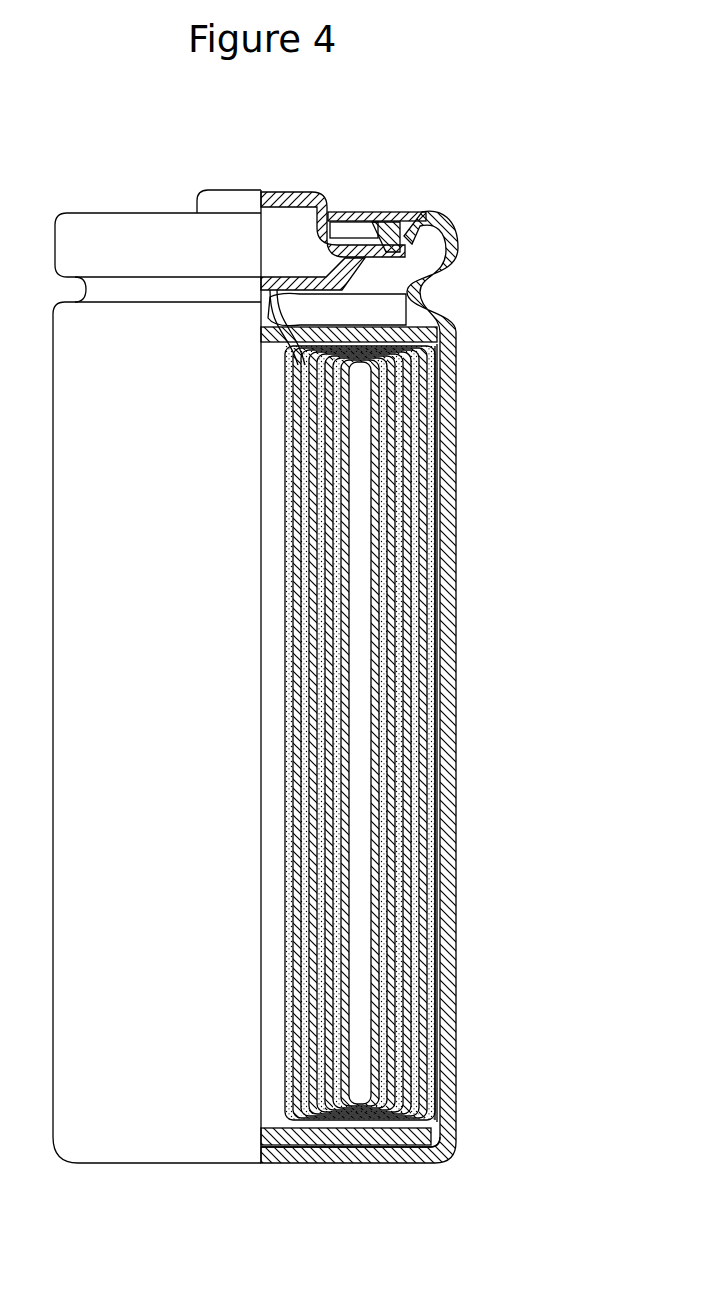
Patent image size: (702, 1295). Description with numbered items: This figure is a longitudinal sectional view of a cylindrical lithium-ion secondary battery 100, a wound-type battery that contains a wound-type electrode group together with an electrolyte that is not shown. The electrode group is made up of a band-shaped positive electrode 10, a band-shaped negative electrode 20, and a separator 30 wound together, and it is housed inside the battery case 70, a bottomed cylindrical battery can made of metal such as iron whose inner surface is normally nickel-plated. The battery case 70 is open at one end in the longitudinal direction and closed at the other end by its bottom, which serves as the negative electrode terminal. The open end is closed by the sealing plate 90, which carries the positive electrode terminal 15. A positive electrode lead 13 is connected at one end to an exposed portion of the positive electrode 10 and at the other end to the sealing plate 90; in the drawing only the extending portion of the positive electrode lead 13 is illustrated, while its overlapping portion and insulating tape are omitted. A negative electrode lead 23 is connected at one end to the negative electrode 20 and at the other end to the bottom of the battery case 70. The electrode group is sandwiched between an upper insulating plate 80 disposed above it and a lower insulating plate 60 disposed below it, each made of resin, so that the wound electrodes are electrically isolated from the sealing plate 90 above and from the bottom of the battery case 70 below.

The lithium-ion secondary battery 100 is at (198, 120).
The positive electrode terminal 15 is at (302, 192).
The sealing plate 90 is at (425, 222).
The positive electrode lead 13 is at (415, 293).
The upper insulating plate 80 is at (458, 340).
The negative electrode 20 is at (412, 500).
The separator 30 is at (378, 620).
The positive electrode 10 is at (433, 725).
The battery case 70 is at (443, 838).
The lower insulating plate 60 is at (323, 1165).
The negative electrode lead 23 is at (387, 1164).